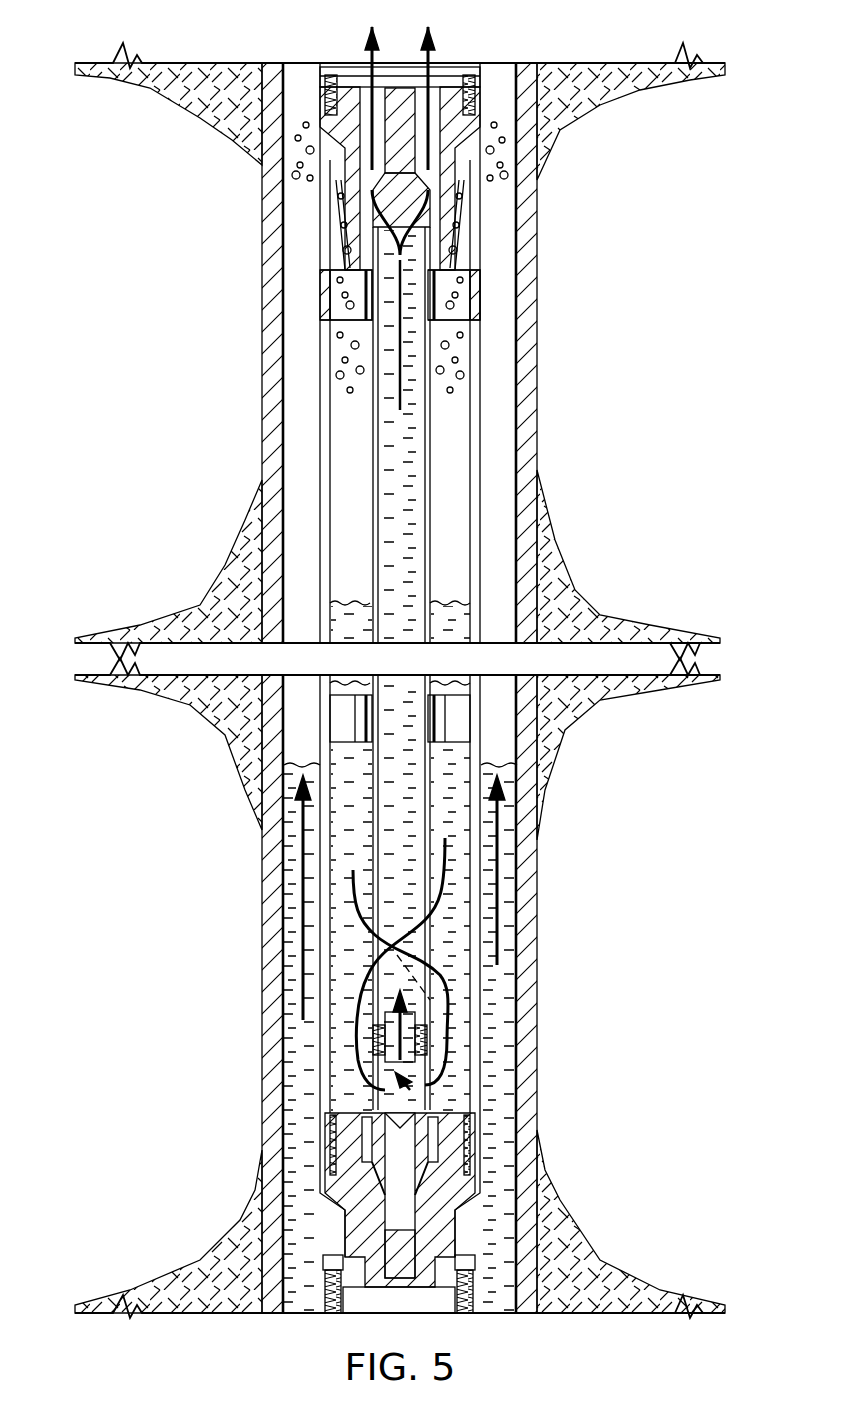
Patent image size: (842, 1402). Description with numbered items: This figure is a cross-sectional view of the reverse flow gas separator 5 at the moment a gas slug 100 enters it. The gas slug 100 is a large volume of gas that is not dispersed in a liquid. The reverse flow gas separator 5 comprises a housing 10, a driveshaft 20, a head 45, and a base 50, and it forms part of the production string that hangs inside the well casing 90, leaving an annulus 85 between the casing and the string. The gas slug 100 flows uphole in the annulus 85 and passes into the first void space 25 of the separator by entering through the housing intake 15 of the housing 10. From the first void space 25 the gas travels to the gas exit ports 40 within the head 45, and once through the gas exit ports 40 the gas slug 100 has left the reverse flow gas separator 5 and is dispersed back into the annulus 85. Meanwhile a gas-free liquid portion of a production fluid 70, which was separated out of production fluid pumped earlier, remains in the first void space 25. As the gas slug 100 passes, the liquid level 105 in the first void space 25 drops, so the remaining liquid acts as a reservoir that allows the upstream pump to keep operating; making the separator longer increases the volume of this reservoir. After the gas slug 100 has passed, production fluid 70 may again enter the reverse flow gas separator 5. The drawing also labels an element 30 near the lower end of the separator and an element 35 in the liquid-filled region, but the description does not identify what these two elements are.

The reverse flow gas separator 5 is at (487, 95).
The housing 10 is at (477, 823).
The housing intake 15 is at (477, 425).
The driveshaft 20 is at (460, 923).
The first void space 25 is at (460, 878).
The nozzle 30 is at (417, 1067).
The fluid in tubing 35 is at (400, 870).
The gas exit ports 40 is at (463, 195).
The head 45 is at (343, 122).
The base 50 is at (473, 1180).
The production fluid 70 is at (303, 960).
The annulus 85 is at (292, 1090).
The well casing 90 is at (272, 222).
The gas slug 100 is at (302, 473).
The liquid level 105 is at (345, 600).